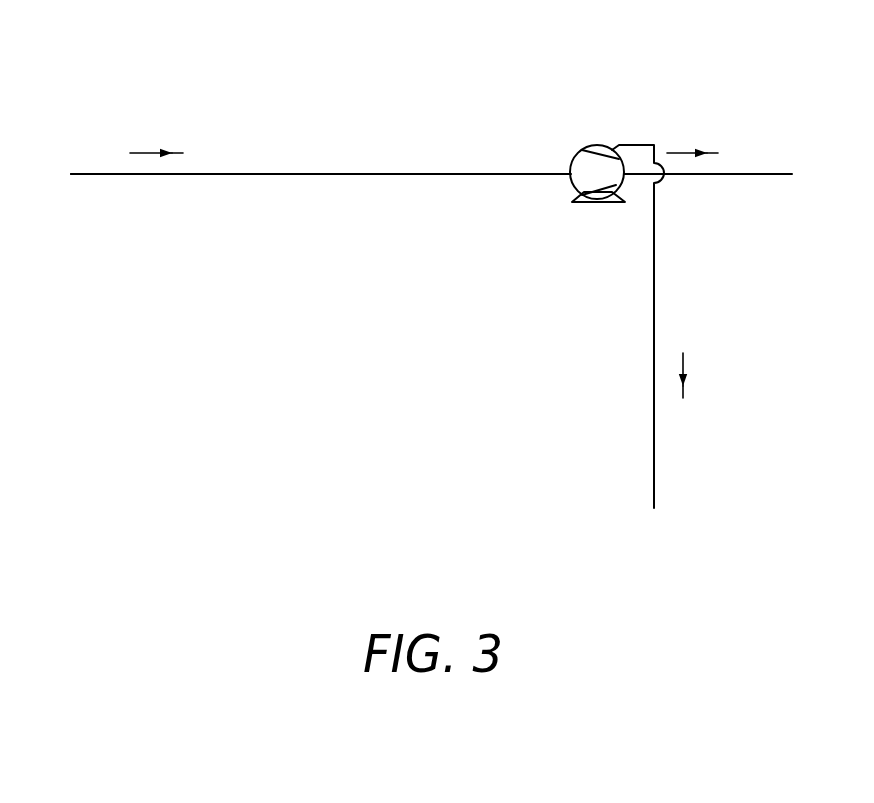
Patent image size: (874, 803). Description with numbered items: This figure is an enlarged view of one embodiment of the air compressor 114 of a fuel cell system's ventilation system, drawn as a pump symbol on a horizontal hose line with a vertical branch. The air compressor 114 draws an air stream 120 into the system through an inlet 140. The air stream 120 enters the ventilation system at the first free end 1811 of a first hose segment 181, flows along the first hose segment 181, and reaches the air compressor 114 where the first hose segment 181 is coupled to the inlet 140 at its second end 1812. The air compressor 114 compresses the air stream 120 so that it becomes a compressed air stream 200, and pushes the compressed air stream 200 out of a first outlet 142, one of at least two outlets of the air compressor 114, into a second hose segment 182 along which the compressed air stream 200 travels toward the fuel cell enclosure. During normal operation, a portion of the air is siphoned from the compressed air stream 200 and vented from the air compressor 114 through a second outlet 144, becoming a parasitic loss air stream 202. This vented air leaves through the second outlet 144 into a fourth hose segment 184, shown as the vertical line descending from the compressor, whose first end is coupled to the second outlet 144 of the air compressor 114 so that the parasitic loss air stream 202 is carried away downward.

The air compressor 114 is at (605, 125).
The air stream 120 is at (232, 167).
The inlet 140 is at (575, 184).
The first outlet 142 is at (621, 183).
The second outlet 144 is at (613, 151).
The first hose segment 181 is at (313, 174).
The first free end 1811 is at (108, 174).
The second end 1812 is at (571, 174).
The second hose segment 182 is at (770, 175).
The fourth hose segment 184 is at (654, 450).
The compressed air stream 200 is at (768, 166).
The parasitic loss air stream 202 is at (707, 436).